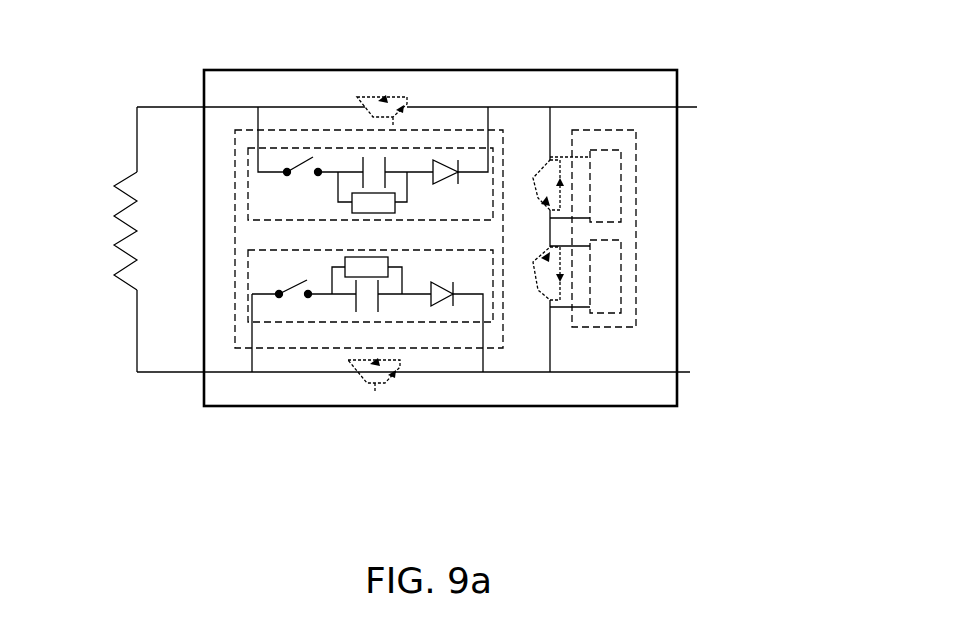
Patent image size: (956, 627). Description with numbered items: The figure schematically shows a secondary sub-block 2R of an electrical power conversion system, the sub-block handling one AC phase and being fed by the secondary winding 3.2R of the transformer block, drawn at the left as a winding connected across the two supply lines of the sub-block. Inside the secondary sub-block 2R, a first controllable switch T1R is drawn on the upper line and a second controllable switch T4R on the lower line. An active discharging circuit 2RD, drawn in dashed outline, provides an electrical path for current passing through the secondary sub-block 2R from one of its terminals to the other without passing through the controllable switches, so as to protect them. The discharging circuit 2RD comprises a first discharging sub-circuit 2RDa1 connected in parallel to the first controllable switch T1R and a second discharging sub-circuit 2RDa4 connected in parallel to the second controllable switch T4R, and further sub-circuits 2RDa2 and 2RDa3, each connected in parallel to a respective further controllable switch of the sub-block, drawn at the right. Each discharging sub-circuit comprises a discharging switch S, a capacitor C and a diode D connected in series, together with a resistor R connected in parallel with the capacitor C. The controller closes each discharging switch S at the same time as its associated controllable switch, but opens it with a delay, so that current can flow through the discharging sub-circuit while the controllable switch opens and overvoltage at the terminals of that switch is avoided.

The secondary winding 3.2R is at (128, 176).
The capacitor C is at (357, 163).
The first controllable switch T1R is at (382, 94).
The diode D is at (446, 165).
The first discharging sub-circuit 2RDa1 is at (493, 182).
The first discharging sub-circuit 2RDa2 is at (618, 262).
The second discharging sub-circuit 2RDa3 is at (608, 192).
The second discharging sub-circuit 2RDa4 is at (422, 322).
The discharging switch S is at (298, 183).
The resistor R is at (372, 214).
The secondary sub-block 2R is at (204, 387).
The discharging circuit 2RD is at (273, 350).
The second controllable switch T4R is at (375, 391).